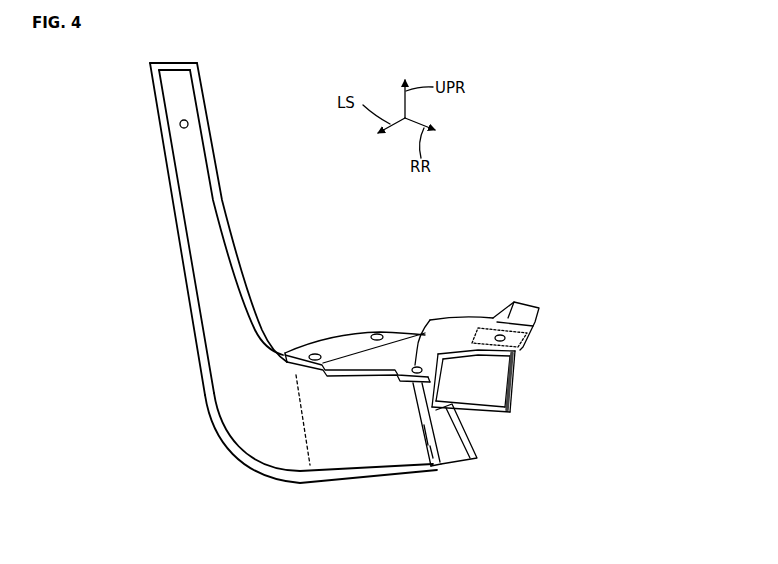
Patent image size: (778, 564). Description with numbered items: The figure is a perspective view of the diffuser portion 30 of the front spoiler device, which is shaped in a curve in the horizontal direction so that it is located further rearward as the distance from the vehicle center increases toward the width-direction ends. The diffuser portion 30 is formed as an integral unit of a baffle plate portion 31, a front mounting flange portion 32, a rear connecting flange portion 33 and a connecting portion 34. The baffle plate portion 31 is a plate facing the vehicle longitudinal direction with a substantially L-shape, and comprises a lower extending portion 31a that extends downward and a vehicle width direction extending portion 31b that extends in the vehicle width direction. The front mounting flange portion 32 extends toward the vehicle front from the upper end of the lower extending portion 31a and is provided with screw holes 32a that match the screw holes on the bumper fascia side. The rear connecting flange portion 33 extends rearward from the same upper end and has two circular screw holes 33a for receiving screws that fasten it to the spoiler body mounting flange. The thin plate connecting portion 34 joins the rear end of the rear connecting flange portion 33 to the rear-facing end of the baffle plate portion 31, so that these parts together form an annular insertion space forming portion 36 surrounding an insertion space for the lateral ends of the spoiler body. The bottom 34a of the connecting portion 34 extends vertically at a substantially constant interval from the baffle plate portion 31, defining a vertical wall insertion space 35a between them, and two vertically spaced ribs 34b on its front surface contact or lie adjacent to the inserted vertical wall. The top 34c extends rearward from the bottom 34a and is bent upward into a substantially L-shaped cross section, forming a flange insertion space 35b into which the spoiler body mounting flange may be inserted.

The diffuser portion 30 is at (310, 260).
The baffle plate portion 31 is at (188, 308).
The lower extending portion 31a is at (326, 440).
The vehicle width direction extending portion 31b is at (208, 249).
The front mounting flange portion 32 is at (337, 345).
The screw holes 32a is at (312, 352).
The rear connecting flange portion 33 is at (468, 326).
The screw holes 33a is at (418, 366).
The connecting portion 34 is at (510, 422).
The bottom of the connecting portion 34a is at (464, 452).
The ribs 34b is at (424, 452).
The top of the connecting portion 34c is at (510, 406).
The vertical wall insertion space 35a is at (434, 471).
The flange insertion space 35b is at (483, 381).
The insertion space forming portion 36 is at (530, 366).